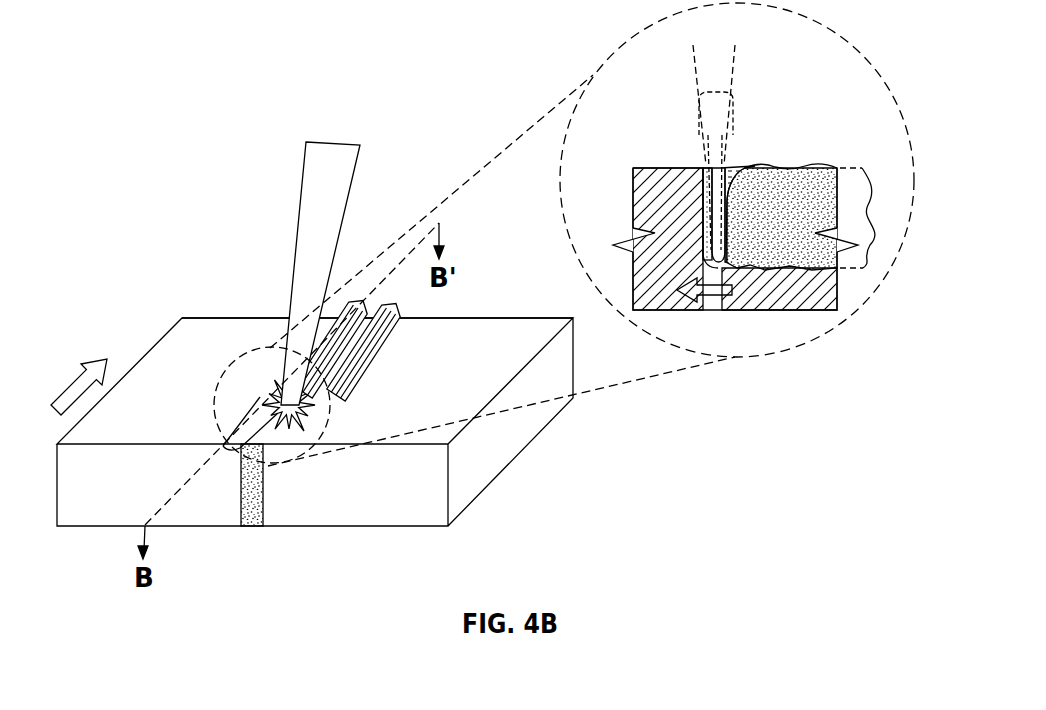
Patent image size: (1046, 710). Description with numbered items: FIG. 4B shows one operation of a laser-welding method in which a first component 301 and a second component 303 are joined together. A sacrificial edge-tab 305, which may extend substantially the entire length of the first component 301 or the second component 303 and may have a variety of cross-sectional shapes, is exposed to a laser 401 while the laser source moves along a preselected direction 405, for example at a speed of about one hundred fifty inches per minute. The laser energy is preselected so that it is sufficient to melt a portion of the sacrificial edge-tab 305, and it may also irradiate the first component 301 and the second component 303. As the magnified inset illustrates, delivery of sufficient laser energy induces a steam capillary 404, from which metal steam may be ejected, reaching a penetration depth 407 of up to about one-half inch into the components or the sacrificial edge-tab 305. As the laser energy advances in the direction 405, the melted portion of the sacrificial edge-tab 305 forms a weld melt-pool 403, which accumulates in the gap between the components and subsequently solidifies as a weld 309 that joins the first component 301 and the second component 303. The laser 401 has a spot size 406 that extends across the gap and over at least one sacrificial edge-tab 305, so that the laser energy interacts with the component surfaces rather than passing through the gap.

The first component 301 is at (515, 336).
The second component 303 is at (215, 334).
The sacrificial edge-tab 305 is at (338, 334).
The weld 309 is at (248, 528).
The laser 401 is at (303, 240).
The weld melt-pool 403 is at (741, 166).
The steam capillary 404 is at (705, 222).
The direction 405 is at (84, 367).
The spot size 406 is at (706, 152).
The penetration depth 407 is at (879, 222).